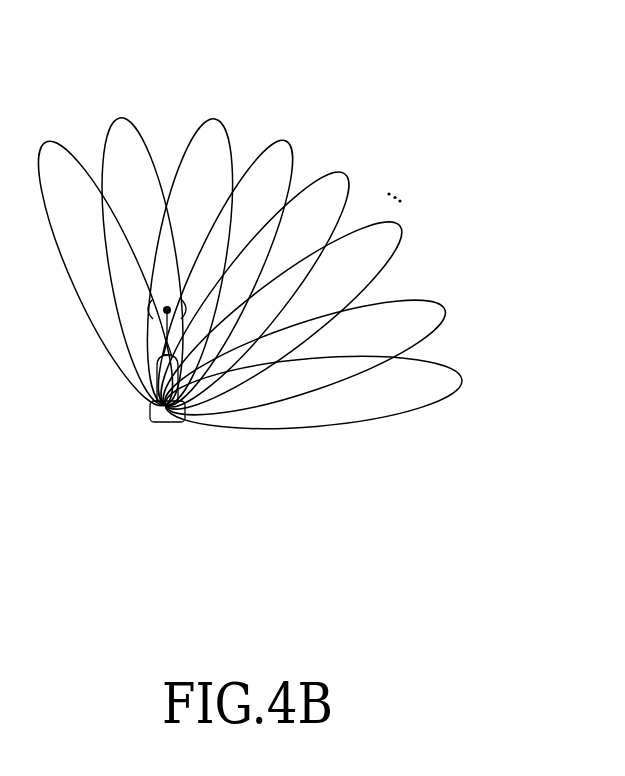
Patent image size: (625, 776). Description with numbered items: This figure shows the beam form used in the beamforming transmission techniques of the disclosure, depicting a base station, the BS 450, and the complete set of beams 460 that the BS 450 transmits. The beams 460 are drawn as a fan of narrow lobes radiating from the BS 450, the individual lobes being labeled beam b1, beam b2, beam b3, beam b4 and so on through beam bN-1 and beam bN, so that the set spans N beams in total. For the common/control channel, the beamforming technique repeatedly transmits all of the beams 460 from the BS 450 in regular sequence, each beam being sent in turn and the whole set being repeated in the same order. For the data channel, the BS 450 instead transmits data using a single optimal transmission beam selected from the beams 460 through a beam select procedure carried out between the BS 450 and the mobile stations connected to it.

The beams 460 is at (255, 239).
The BS 450 is at (170, 421).
The beam b1 is at (105, 264).
The beam b2 is at (142, 249).
The beam b3 is at (190, 249).
The beam b4 is at (225, 265).
The beam bN-1 is at (323, 357).
The beam bN is at (329, 392).